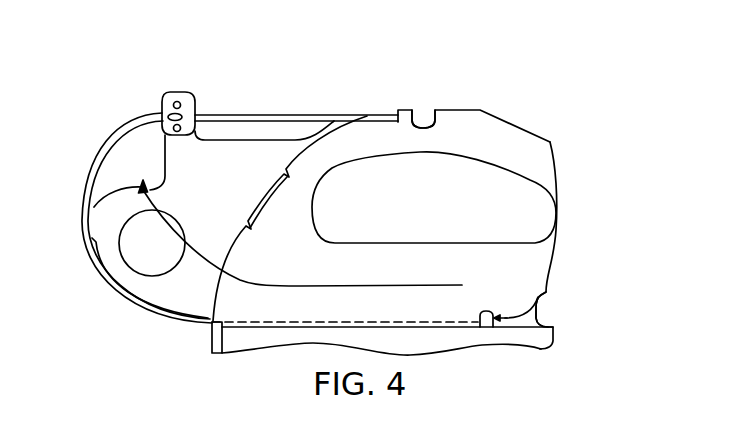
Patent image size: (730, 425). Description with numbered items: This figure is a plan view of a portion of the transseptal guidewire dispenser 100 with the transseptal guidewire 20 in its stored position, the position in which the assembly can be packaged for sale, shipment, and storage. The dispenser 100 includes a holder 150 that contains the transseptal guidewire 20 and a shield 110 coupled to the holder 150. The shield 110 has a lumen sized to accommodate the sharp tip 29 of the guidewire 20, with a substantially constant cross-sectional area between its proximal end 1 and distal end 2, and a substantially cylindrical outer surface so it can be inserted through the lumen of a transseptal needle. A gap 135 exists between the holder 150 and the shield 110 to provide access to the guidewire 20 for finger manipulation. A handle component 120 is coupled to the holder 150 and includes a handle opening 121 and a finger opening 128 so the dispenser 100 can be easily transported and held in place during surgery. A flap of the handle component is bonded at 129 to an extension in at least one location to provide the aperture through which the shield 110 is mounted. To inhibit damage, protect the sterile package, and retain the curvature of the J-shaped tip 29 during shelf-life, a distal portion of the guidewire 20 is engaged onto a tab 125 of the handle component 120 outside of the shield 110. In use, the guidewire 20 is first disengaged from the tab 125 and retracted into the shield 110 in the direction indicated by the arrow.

The proximal end 1 is at (162, 104).
The distal end 2 is at (96, 243).
The transseptal guidewire 20 is at (258, 114).
The sharp tip 29 is at (493, 311).
The transseptal guidewire dispenser 100 is at (518, 104).
The shield 110 is at (105, 147).
The handle component 120 is at (551, 138).
The handle opening 121 is at (540, 179).
The tab 125 is at (542, 294).
The finger opening 128 is at (124, 254).
The bond 129 is at (160, 116).
The gap 135 is at (304, 130).
The holder 150 is at (423, 114).